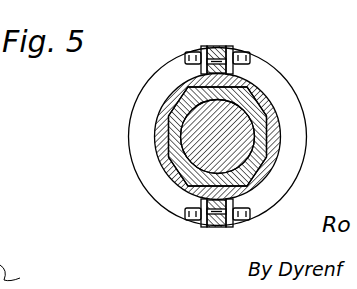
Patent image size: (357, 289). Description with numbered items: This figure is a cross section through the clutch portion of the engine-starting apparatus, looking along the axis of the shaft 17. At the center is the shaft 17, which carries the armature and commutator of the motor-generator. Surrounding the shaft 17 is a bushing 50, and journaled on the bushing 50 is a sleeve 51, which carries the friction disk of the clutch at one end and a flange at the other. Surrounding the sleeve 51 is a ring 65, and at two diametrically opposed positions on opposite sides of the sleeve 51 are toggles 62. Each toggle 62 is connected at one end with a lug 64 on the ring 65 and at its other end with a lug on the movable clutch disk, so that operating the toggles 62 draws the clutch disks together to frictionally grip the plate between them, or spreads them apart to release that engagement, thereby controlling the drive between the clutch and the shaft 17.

The shaft 17 is at (228, 138).
The bushing 50 is at (175, 105).
The sleeve 51 is at (270, 104).
The toggles 62 is at (217, 56).
The lug 64 is at (205, 53).
The ring 65 is at (273, 80).